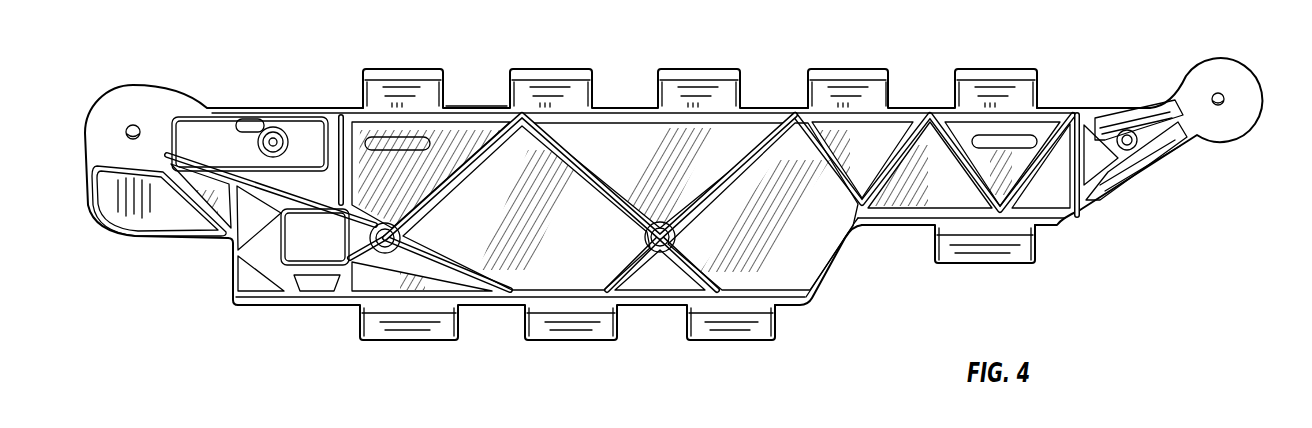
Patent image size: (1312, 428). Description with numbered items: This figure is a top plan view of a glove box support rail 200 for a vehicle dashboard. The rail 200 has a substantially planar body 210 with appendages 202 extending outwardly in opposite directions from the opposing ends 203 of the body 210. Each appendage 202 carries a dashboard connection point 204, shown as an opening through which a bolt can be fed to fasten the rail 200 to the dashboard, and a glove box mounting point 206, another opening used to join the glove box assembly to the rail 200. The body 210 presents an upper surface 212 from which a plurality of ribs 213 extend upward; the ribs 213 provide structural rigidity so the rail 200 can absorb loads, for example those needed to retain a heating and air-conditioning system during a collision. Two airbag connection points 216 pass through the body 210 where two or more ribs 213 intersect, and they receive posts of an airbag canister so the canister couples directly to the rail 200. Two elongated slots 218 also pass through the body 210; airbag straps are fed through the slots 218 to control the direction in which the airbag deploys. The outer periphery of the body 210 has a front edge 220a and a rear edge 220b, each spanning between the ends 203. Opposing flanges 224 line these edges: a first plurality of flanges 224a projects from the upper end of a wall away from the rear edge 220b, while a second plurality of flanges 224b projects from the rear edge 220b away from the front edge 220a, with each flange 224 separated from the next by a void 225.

The rail 200 is at (911, 311).
The appendage 202 is at (103, 136).
The end of the body 203 is at (345, 145).
The dashboard connection point 204 is at (135, 126).
The glove box mounting point 206 is at (270, 137).
The body 210 is at (547, 252).
The upper surface 212 is at (786, 266).
The rib 213 is at (710, 180).
The airbag connection point 216 is at (385, 248).
The slot 218 is at (388, 137).
The front edge 220a is at (841, 266).
The rear edge 220b is at (757, 107).
The flange 224 is at (881, 71).
The first plurality of flanges 224a is at (570, 328).
The second plurality of flanges 224b is at (852, 72).
The void 225 is at (466, 89).